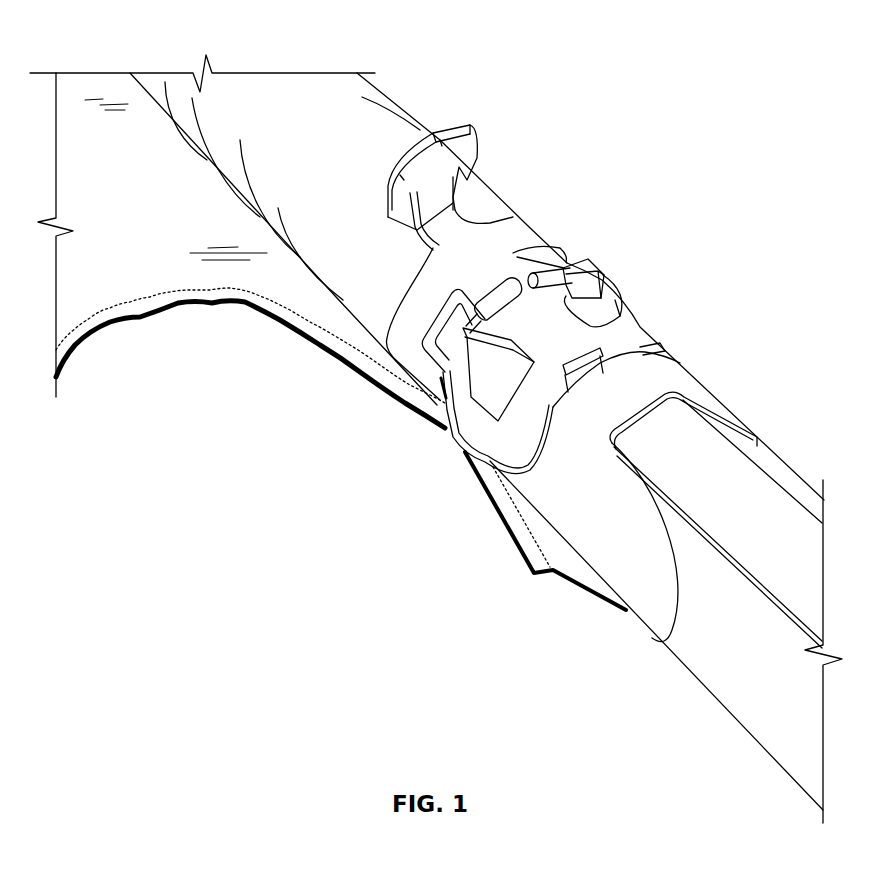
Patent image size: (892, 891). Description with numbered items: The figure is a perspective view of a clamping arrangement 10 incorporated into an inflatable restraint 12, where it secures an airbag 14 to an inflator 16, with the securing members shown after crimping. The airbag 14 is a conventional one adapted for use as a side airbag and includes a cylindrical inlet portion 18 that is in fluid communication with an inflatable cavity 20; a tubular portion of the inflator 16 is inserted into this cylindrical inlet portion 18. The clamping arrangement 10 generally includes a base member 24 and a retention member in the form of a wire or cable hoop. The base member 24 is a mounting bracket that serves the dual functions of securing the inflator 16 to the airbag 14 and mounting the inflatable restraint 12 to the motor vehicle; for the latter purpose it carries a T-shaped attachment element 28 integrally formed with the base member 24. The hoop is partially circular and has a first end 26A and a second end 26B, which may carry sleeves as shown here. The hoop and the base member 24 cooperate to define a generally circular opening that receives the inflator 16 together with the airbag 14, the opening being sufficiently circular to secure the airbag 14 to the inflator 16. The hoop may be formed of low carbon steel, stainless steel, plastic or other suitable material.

The clamping arrangement 10 is at (605, 283).
The inflatable restraint 12 is at (332, 358).
The airbag 14 is at (143, 278).
The inflator 16 is at (708, 670).
The cylindrical inlet portion 18 is at (488, 206).
The inflatable cavity 20 is at (83, 317).
The base member 24 is at (652, 333).
The first end 26A is at (503, 300).
The second end 26B is at (547, 268).
The T-shaped attachment element 28 is at (452, 128).